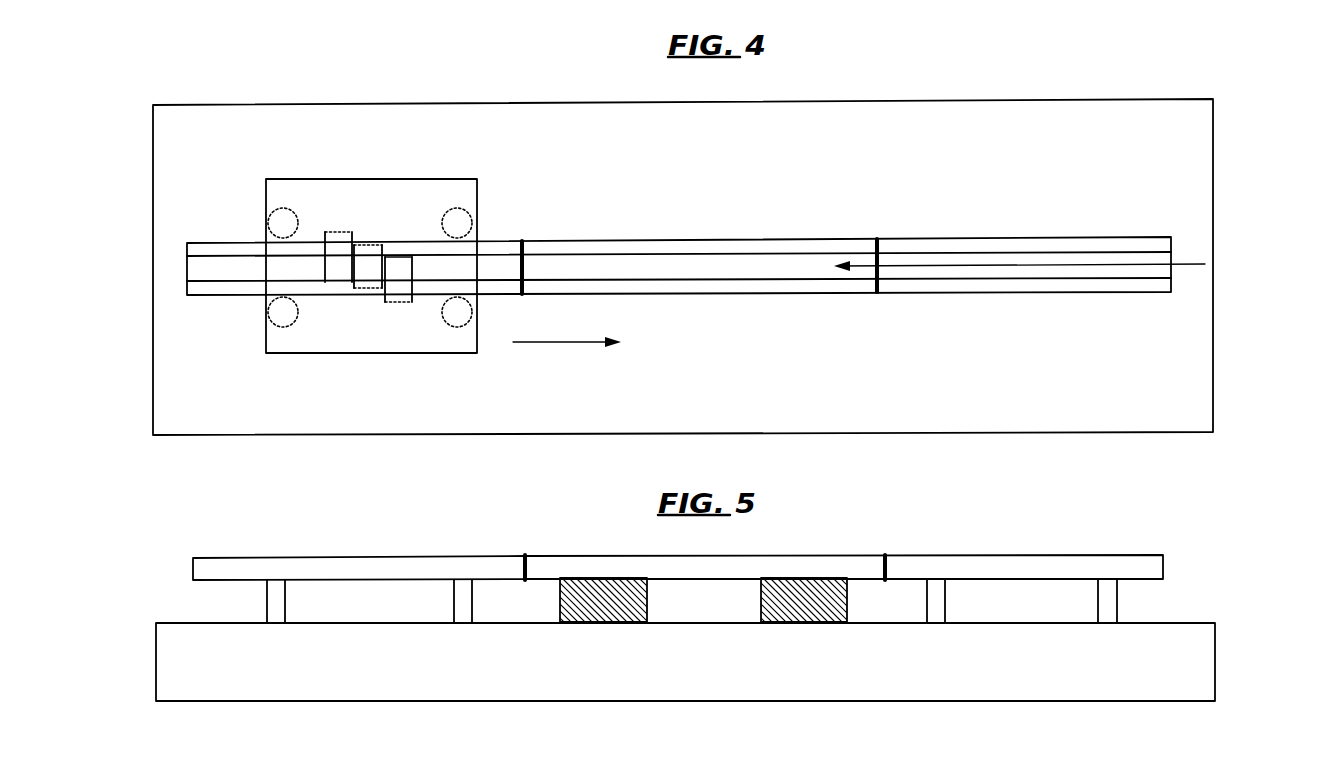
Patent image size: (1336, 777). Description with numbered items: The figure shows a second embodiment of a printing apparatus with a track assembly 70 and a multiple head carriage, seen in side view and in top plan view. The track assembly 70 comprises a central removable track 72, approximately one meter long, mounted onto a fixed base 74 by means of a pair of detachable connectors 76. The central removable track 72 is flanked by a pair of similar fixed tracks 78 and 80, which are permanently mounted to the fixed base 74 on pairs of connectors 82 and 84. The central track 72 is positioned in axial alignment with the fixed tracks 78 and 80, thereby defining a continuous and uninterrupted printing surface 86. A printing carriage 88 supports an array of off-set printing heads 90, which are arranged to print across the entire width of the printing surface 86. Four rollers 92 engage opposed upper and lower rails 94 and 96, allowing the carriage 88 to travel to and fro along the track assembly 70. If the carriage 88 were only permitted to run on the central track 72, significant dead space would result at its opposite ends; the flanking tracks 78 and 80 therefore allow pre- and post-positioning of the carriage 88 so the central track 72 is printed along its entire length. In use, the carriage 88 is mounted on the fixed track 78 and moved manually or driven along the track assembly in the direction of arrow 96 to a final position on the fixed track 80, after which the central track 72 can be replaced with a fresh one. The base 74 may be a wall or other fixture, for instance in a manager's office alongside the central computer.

In FIG. 4, the track assembly 70 is at (664, 219).
In FIG. 4, the central removable track 72 is at (780, 237).
In FIG. 4, the fixed base 74 is at (975, 114).
In FIG. 5, the detachable connectors 76 is at (597, 624).
In FIG. 5, the fixed track 78 is at (360, 557).
In FIG. 5, the fixed track 80 is at (1070, 555).
In FIG. 5, the connectors 82 is at (284, 602).
In FIG. 5, the connectors 84 is at (946, 602).
In FIG. 4, the printing surface 86 is at (1205, 264).
In FIG. 4, the printing carriage 88 is at (390, 353).
In FIG. 4, the off-set printing heads 90 is at (398, 266).
In FIG. 4, the rollers 92 is at (283, 208).
In FIG. 4, the upper rail 94 is at (221, 250).
In FIG. 4, the lower rail 96 is at (552, 350).